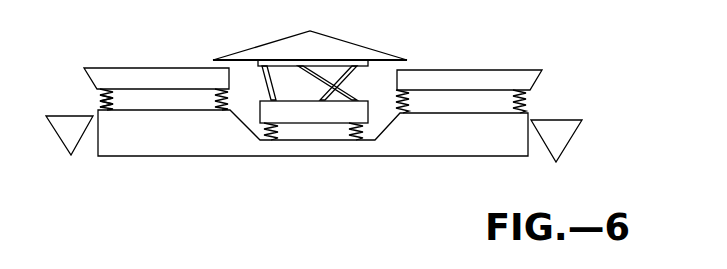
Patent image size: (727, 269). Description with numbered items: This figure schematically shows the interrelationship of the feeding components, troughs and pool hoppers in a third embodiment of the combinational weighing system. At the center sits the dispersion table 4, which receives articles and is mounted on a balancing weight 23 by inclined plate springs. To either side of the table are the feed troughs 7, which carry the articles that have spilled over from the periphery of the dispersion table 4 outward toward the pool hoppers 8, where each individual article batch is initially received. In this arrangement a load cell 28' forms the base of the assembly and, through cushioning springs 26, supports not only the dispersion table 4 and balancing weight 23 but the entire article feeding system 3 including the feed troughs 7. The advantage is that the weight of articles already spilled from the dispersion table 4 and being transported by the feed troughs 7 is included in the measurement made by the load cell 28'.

The article feeding system 3 is at (149, 57).
The dispersion table 4 is at (347, 45).
The feed troughs 7 is at (473, 73).
The pool hopper 8 is at (567, 137).
The balancing weight 23 is at (268, 118).
The cushioning springs 26 is at (113, 97).
The load cell 28' is at (313, 150).